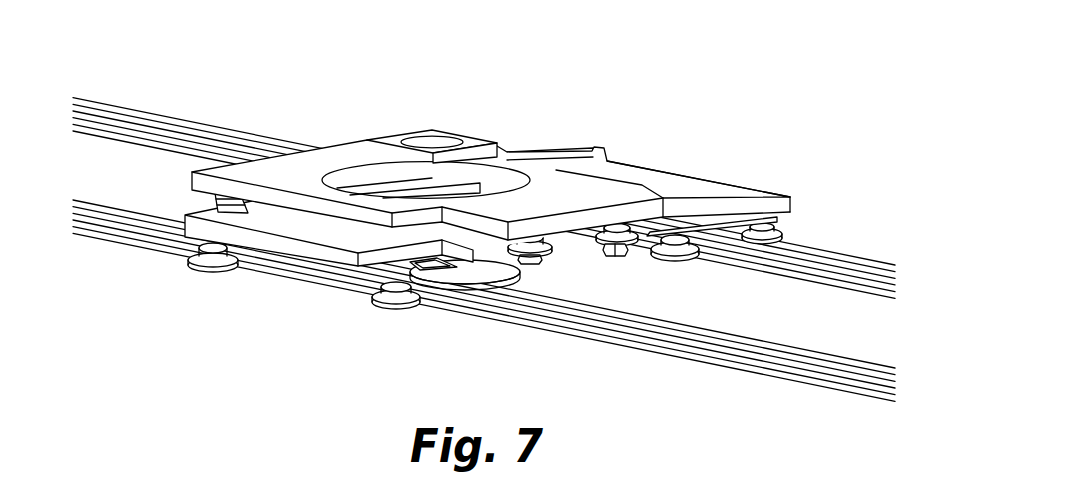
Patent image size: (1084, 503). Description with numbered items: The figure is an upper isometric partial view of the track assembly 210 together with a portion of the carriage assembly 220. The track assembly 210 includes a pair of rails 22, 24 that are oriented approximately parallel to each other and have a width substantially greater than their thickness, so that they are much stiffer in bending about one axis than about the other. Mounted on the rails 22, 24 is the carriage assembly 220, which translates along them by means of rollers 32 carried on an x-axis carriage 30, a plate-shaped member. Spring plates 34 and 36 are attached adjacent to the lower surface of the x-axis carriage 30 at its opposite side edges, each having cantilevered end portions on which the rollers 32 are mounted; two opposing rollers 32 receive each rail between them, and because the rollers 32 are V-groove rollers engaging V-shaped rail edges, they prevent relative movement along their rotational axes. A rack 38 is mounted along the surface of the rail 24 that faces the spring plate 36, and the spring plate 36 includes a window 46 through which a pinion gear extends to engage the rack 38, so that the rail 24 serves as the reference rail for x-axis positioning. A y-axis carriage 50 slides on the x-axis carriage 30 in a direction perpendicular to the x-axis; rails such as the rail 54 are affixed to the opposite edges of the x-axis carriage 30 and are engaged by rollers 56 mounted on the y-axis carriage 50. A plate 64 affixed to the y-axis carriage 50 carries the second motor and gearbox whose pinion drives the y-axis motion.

The track assembly 210 is at (141, 71).
The carriage assembly 220 is at (735, 108).
The rail 22 is at (875, 265).
The rail 24 is at (493, 309).
The rack 38 is at (858, 358).
The x-axis carriage 30 is at (730, 193).
The rollers 32 is at (375, 302).
The spring plate 34 is at (788, 218).
The spring plate 36 is at (441, 270).
The window 46 is at (520, 268).
The y-axis carriage 50 is at (352, 156).
The rail 54 is at (213, 210).
The rollers 56 is at (612, 256).
The plate 64 is at (488, 143).